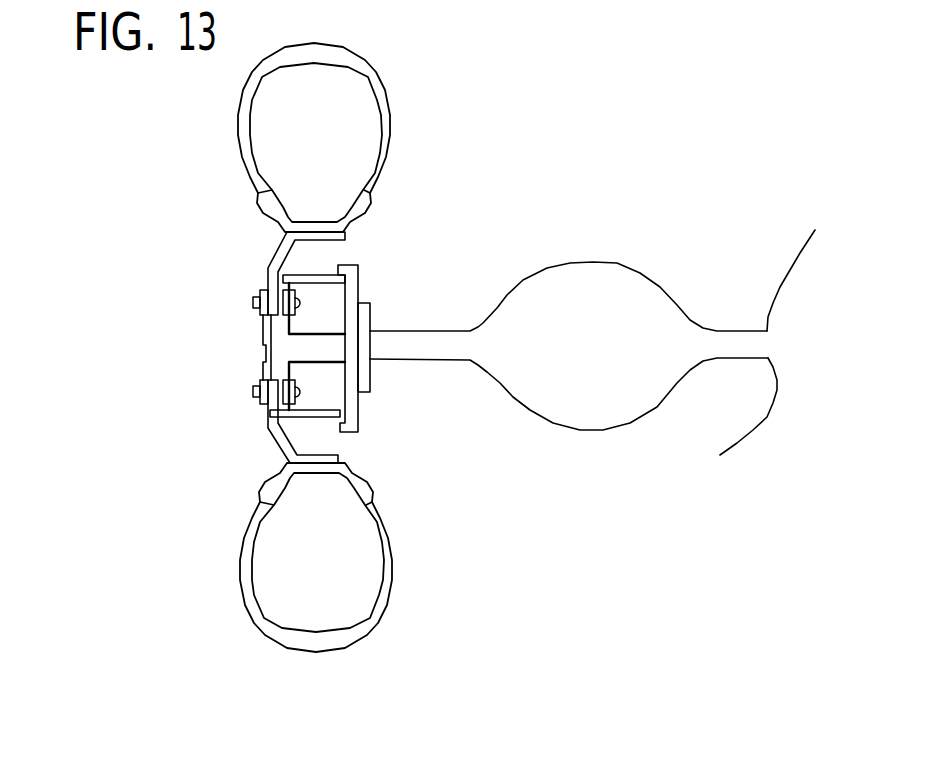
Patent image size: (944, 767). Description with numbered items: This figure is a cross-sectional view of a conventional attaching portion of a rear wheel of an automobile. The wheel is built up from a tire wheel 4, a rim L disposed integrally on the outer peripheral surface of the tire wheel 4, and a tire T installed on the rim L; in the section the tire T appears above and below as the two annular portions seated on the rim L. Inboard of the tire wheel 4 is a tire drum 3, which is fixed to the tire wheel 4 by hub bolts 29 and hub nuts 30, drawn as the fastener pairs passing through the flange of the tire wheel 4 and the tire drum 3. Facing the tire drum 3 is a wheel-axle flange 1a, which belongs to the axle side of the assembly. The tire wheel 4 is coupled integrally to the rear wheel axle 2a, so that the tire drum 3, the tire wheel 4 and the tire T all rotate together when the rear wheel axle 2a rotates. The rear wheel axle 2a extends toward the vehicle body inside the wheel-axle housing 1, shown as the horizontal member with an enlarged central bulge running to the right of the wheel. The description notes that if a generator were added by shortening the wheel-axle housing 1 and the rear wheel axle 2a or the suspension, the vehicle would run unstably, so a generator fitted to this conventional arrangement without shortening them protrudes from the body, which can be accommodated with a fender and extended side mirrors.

The tire T is at (377, 80).
The rim L is at (257, 202).
The wheel-axle housing 1 is at (382, 348).
The wheel-axle flange 1a is at (352, 433).
The rear wheel axle 2a is at (265, 360).
The tire drum 3 is at (318, 276).
The tire wheel 4 is at (267, 266).
The hub bolt 29 is at (255, 307).
The hub nut 30 is at (263, 405).